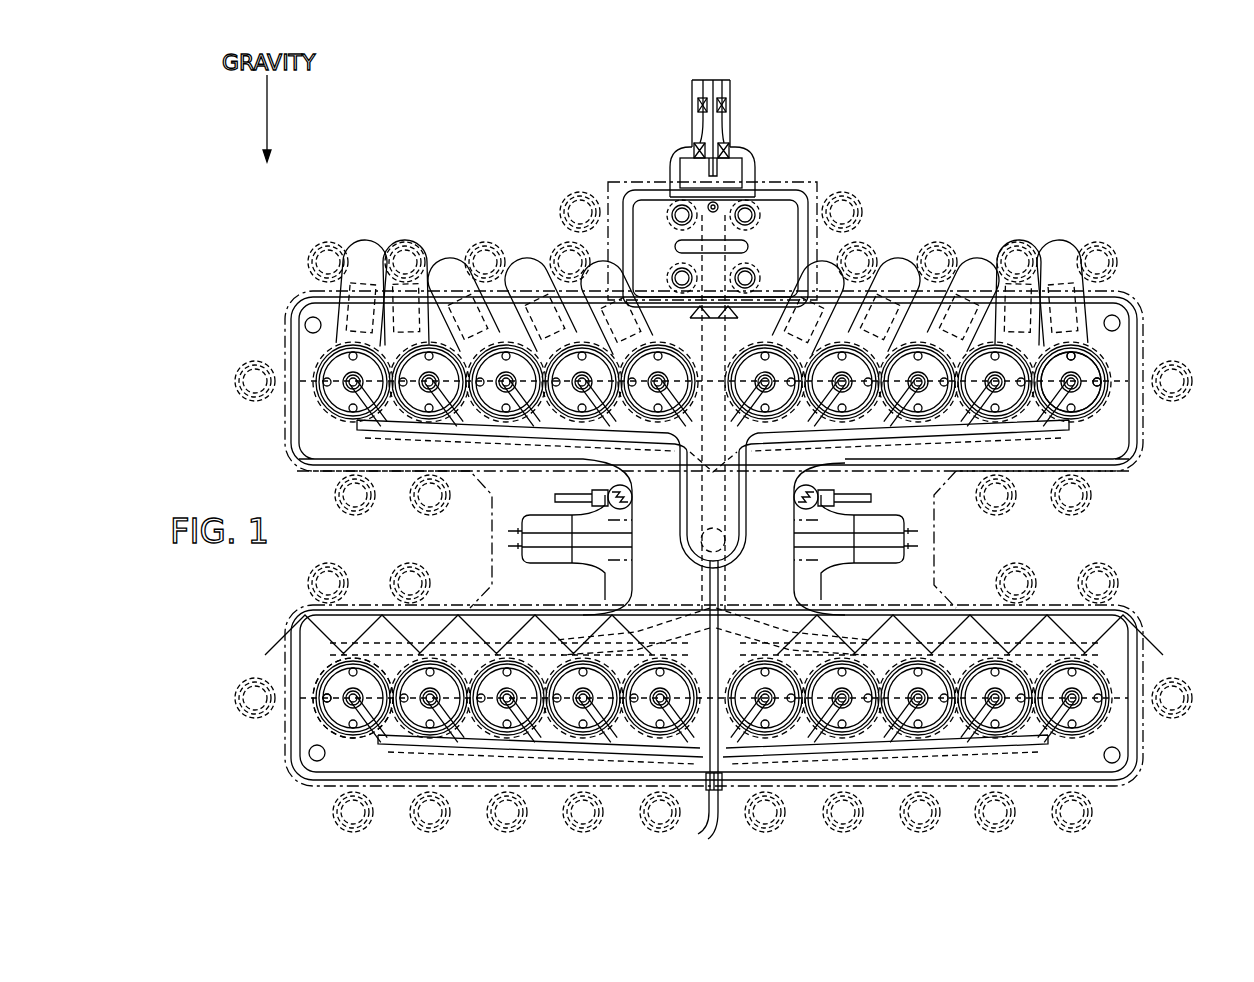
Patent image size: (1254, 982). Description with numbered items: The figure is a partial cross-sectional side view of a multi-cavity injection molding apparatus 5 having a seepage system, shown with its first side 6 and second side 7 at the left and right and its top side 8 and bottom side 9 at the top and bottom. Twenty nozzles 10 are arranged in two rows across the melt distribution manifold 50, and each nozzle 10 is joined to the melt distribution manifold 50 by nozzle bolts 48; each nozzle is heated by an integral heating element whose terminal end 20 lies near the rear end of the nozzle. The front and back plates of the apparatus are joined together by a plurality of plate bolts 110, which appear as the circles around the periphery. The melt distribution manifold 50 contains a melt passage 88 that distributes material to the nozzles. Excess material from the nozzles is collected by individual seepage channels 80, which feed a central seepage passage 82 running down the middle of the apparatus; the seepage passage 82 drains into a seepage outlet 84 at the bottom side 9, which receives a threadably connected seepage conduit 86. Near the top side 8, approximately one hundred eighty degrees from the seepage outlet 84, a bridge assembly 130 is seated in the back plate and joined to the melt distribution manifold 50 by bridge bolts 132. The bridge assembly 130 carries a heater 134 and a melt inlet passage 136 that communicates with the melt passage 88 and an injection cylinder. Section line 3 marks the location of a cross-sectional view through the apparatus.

The section line 3- 3 is at (708, 47).
The injection molding apparatus 5 is at (1005, 170).
The first side 6 is at (280, 440).
The second side 7 is at (1160, 666).
The top side 8 is at (830, 181).
The bottom side 9 is at (957, 793).
The nozzle 10 is at (1090, 362).
The terminal end 20 is at (322, 688).
The nozzle bolt 48 is at (1103, 390).
The melt distribution manifold 50 is at (1112, 428).
The seepage channel 80 is at (332, 386).
The seepage passage 82 is at (757, 511).
The seepage outlet 84 is at (722, 782).
The seepage conduit 86 is at (708, 813).
The melt passage 88 is at (730, 245).
The plate bolt 110 is at (1095, 495).
The bridge assembly 130 is at (770, 188).
The bridge bolt 132 is at (673, 212).
The heater 134 is at (700, 147).
The melt inlet passage 136 is at (763, 180).